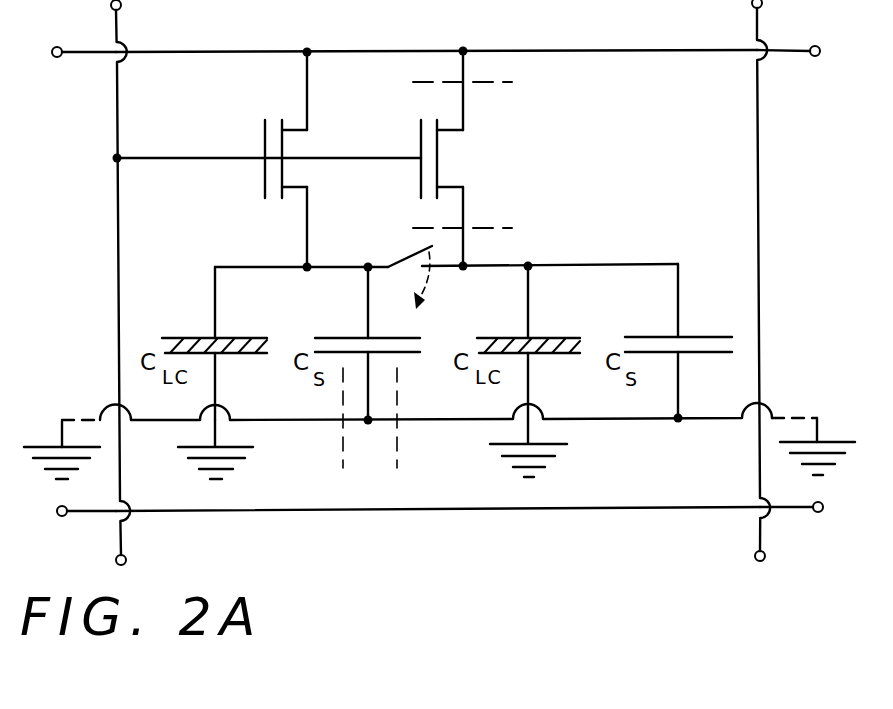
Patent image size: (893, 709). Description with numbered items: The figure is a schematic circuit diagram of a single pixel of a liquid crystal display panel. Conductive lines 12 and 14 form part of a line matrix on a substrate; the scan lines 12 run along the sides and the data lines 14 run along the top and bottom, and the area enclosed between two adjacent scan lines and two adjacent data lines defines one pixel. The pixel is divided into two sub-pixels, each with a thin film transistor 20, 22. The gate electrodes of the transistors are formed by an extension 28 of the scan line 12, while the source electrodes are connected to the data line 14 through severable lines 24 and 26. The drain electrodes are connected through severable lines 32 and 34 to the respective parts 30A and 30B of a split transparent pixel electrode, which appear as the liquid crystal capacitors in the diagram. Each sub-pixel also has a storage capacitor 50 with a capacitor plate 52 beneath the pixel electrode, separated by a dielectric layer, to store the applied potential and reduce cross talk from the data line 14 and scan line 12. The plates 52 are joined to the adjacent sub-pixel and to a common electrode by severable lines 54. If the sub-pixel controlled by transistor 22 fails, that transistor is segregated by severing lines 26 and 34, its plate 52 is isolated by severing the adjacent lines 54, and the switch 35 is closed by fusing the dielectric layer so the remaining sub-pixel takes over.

The scan line 12 is at (116, 273).
The data line 14 is at (388, 50).
The transistor 20 is at (277, 118).
The transistor 22 is at (430, 119).
The severable line 24 is at (308, 98).
The severable line 26 is at (467, 127).
The extension 28 is at (397, 162).
The pixel electrode part 30A is at (243, 337).
The pixel electrode part 30B is at (543, 337).
The severable line 32 is at (307, 222).
The severable line 34 is at (467, 196).
The switch 35 is at (413, 253).
The storage capacitor 50 is at (413, 347).
The capacitor plate 52 is at (413, 354).
The severable line 54 is at (327, 422).